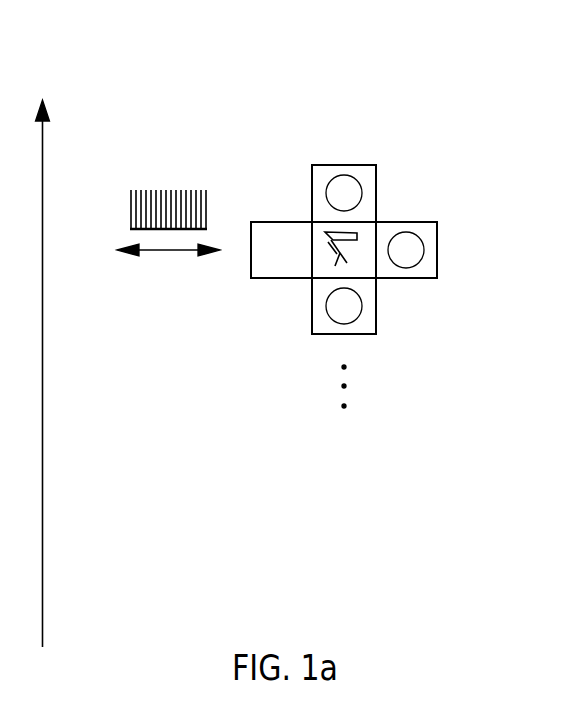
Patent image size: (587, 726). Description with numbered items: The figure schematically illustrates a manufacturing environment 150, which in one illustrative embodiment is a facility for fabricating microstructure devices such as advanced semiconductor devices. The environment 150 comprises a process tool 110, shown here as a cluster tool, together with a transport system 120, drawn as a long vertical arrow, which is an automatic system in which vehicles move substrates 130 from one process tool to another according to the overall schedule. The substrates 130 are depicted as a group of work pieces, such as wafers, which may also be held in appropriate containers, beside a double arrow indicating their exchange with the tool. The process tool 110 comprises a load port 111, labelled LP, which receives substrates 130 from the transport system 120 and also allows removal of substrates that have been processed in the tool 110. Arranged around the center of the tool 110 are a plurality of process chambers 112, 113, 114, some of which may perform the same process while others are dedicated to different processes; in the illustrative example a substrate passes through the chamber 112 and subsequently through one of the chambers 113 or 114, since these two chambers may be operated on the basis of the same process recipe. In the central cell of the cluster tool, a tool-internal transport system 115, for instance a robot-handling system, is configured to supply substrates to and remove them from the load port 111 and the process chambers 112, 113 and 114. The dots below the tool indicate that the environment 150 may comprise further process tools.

The manufacturing environment 150 is at (231, 106).
The process tool 110 is at (466, 161).
The load port 111 is at (272, 222).
The process chamber 112 is at (376, 186).
The process chamber 113 is at (437, 240).
The process chamber 114 is at (376, 317).
The tool-internal transport system 115 is at (325, 262).
The transport system 120 is at (43, 392).
The substrates 130 is at (171, 185).